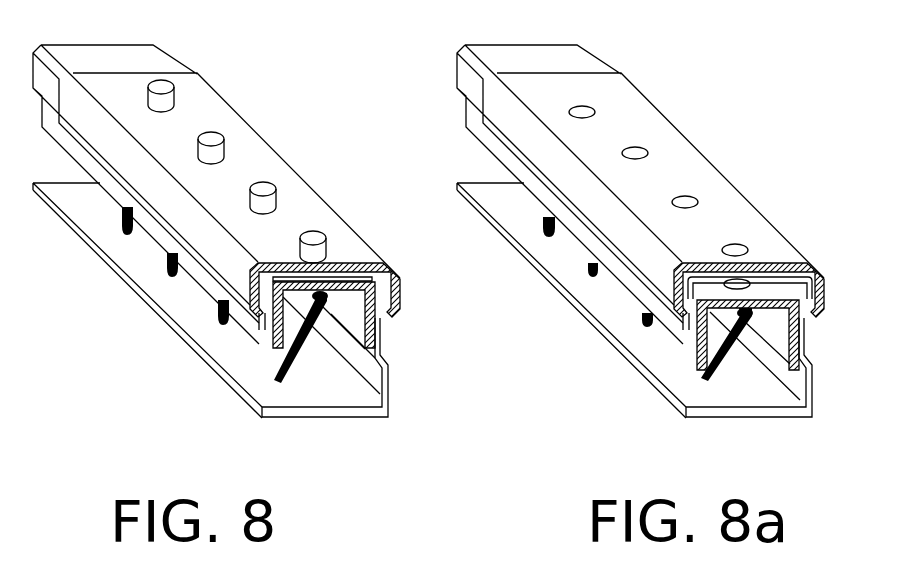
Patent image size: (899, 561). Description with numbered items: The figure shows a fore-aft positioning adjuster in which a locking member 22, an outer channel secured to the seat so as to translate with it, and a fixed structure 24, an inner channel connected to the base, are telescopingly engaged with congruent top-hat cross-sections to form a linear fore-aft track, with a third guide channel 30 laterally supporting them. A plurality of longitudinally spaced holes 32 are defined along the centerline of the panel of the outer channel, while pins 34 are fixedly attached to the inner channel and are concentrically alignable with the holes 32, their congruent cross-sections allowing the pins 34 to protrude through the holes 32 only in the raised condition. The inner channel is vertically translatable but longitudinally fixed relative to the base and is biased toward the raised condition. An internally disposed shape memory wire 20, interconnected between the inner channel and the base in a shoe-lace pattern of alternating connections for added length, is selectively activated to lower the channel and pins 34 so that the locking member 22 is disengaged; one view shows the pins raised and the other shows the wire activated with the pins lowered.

In FIG. 8, the shape memory wire 20 is at (270, 349).
In FIG. 8A, the shape memory wire 20 is at (690, 381).
In FIG. 8, the locking member 22 is at (290, 172).
In FIG. 8A, the locking member 22 is at (592, 152).
In FIG. 8, the fixed structure 24 is at (383, 304).
In FIG. 8A, the fixed structure 24 is at (697, 323).
In FIG. 8, the guide channel 30 is at (387, 365).
In FIG. 8A, the guide channel 30 is at (627, 355).
In FIG. 8A, the holes 32 is at (568, 110).
In FIG. 8, the pins 34 is at (173, 93).